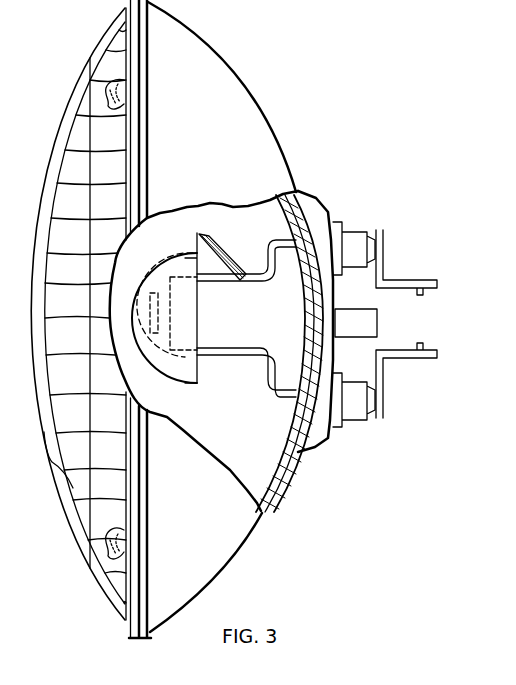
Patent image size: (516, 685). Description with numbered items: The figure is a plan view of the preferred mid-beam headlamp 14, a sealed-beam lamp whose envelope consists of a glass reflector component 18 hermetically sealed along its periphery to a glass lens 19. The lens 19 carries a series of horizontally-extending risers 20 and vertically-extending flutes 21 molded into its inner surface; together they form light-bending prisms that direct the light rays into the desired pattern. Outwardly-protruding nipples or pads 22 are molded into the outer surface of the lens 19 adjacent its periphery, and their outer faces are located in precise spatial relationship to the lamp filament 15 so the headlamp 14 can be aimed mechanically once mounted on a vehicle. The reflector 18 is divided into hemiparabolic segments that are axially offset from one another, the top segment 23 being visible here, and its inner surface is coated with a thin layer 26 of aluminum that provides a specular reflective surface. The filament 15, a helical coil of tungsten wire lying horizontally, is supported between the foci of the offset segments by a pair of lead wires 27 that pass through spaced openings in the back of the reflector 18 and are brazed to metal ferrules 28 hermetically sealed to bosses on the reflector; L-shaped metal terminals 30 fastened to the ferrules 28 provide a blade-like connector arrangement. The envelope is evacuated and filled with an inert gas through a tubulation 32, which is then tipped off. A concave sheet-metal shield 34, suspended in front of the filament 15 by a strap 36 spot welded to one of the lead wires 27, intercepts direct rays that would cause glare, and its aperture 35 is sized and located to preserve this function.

The mid-beam headlamp 14 is at (270, 63).
The lamp filament 15 is at (173, 313).
The glass reflector component 18 is at (254, 107).
The glass lens 19 is at (88, 566).
The horizontally-extending risers 20 is at (84, 280).
The vertically-extending flutes 21 is at (77, 453).
The outwardly-protruding pads 22 is at (122, 88).
The top hemiparabolic segment 23 is at (298, 195).
The thin layer of aluminum 26 is at (273, 456).
The lead wires 27 is at (219, 283).
The metal ferrules 28 is at (358, 242).
The L-shaped metal terminals 30 is at (393, 278).
The tubulation 32 is at (372, 326).
The concave shield 34 is at (182, 384).
The aperture 35 is at (146, 264).
The strap 36 is at (222, 251).